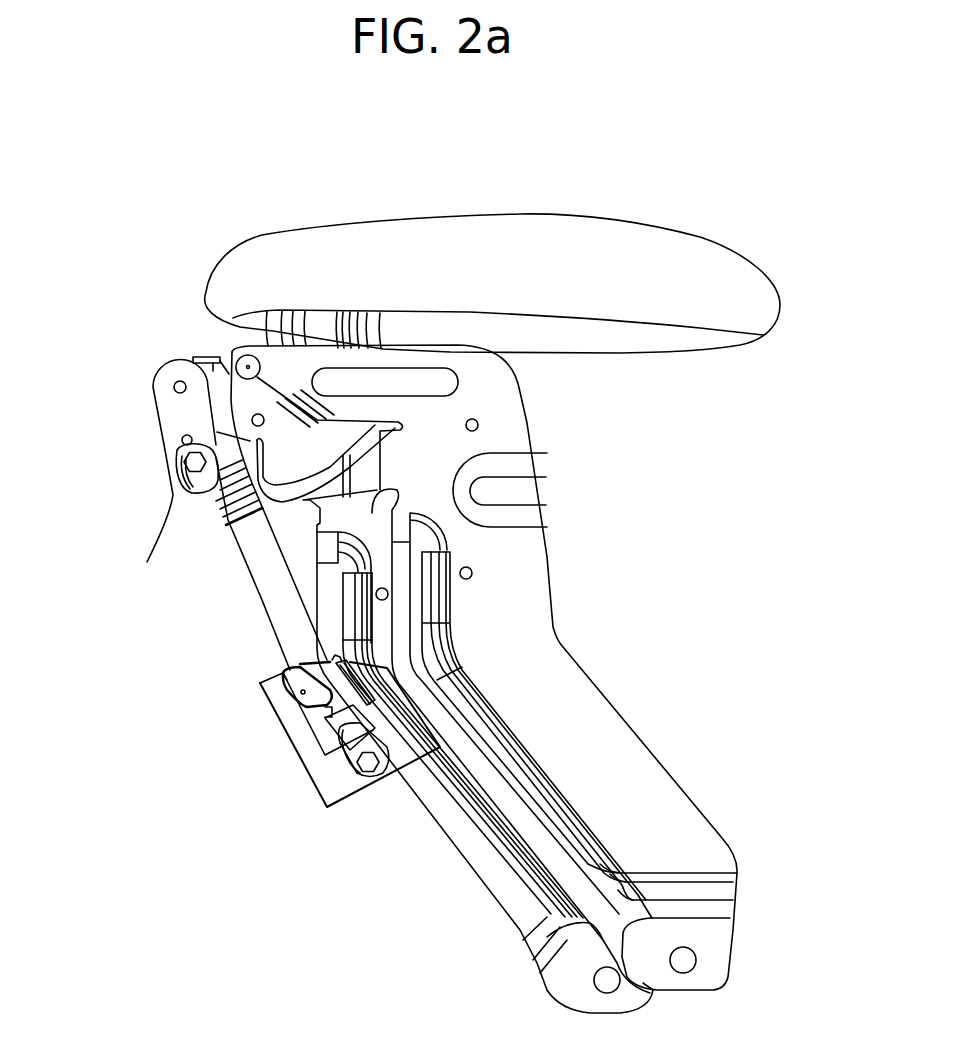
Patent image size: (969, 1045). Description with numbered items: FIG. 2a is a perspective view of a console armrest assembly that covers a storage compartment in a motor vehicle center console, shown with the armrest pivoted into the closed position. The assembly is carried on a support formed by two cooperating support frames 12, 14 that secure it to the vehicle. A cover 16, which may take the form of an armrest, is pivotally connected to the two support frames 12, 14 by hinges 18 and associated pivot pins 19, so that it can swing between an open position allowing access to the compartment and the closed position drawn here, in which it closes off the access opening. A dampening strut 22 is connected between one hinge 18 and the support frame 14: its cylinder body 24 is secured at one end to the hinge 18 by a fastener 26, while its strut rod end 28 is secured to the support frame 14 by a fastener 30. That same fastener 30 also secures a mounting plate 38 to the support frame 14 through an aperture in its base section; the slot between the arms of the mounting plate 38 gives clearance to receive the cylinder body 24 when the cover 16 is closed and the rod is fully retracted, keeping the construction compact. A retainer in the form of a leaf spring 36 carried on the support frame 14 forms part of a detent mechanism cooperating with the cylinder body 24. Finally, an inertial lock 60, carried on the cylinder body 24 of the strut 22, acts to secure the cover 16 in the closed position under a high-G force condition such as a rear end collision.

The support frame 12 is at (607, 725).
The support frame 14 is at (480, 872).
The cover 16 is at (632, 240).
The hinge 18 is at (303, 483).
The pivot pin 19 is at (178, 385).
The dampening strut 22 is at (173, 666).
The cylinder body 24 is at (250, 577).
The fastener 26 is at (186, 462).
The strut rod end 28 is at (343, 763).
The fastener 30 is at (368, 765).
The leaf spring 36 is at (380, 667).
The mounting plate 38 is at (303, 750).
The inertial lock 60 is at (232, 698).